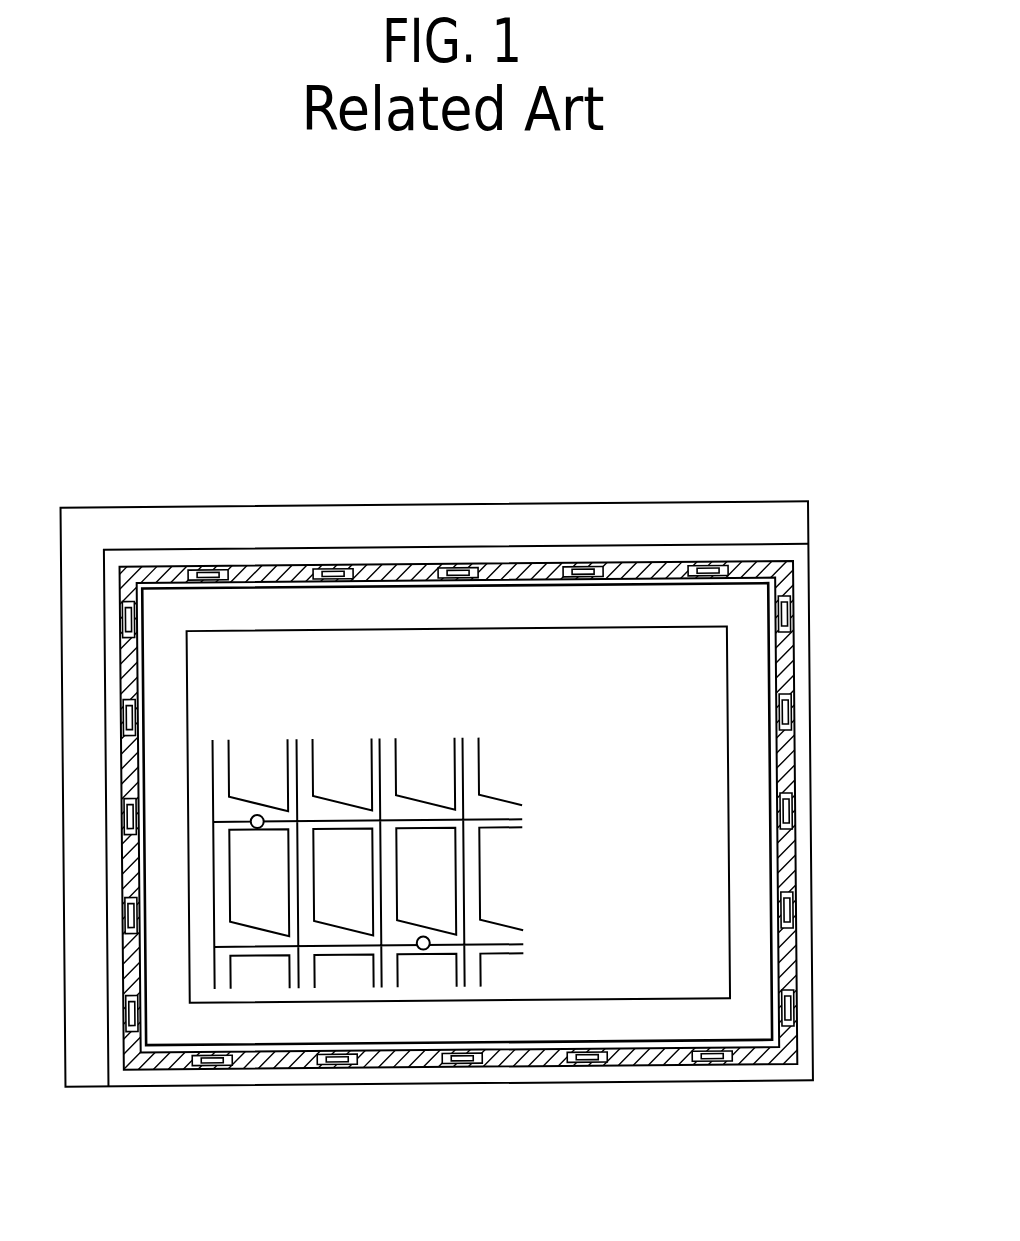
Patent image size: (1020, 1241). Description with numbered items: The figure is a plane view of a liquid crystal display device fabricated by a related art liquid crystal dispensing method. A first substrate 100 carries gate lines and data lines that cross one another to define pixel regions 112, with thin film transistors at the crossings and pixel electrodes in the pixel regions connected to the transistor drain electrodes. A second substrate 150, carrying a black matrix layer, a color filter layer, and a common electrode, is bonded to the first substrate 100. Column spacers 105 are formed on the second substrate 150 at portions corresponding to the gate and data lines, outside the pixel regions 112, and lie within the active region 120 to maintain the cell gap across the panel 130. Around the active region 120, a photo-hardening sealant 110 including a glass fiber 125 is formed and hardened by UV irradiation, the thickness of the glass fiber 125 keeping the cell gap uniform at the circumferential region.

The first substrate 100 is at (810, 520).
The second substrate 150 is at (803, 637).
The photo-hardening sealant 110 is at (795, 968).
The glass fiber 125 is at (700, 568).
The liquid crystal panel 130 is at (750, 747).
The active region 120 is at (710, 867).
The pixel regions 112 is at (348, 887).
The column spacers 105 is at (422, 950).